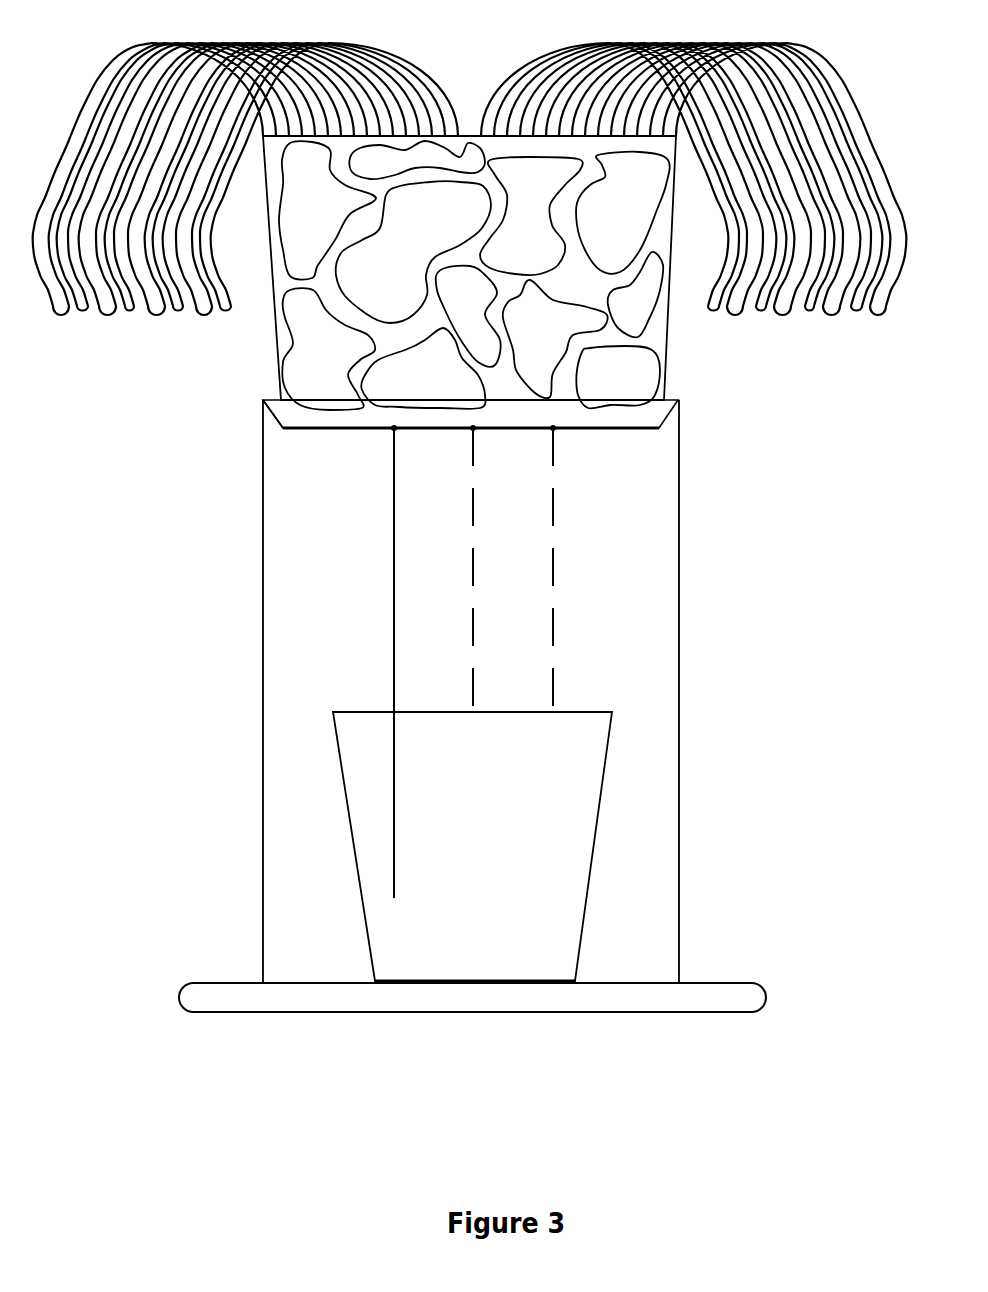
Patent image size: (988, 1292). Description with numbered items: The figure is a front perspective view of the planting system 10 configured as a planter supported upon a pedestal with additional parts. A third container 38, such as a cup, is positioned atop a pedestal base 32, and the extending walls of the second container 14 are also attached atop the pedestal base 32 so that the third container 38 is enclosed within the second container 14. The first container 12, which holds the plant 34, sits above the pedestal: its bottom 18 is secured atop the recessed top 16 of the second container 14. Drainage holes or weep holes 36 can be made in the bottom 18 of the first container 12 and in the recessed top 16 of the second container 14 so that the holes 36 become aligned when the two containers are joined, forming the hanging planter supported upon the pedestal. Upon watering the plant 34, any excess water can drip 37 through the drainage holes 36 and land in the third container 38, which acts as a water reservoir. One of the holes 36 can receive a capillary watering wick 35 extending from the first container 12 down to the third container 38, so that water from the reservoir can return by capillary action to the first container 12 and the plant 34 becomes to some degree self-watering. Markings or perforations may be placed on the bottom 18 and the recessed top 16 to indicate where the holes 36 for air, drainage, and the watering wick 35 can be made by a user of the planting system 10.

The planting system 10 is at (169, 765).
The first container 12 is at (667, 347).
The second container 14 is at (680, 762).
The recessed top 16 is at (680, 402).
The bottom 18 is at (284, 424).
The pedestal base 32 is at (738, 984).
The plant 34 is at (858, 133).
The capillary watering wick 35 is at (393, 592).
The drainage holes 36 is at (554, 430).
The drip 37 is at (553, 577).
The third container 38 is at (585, 862).